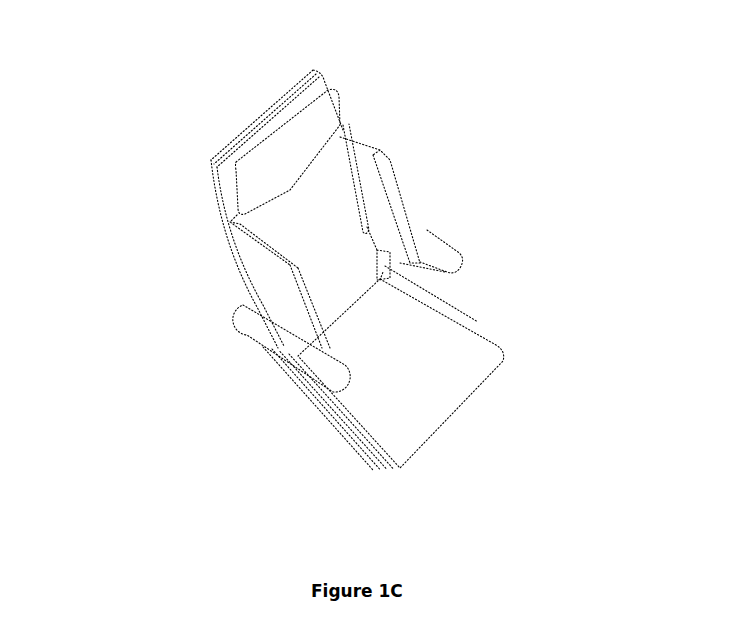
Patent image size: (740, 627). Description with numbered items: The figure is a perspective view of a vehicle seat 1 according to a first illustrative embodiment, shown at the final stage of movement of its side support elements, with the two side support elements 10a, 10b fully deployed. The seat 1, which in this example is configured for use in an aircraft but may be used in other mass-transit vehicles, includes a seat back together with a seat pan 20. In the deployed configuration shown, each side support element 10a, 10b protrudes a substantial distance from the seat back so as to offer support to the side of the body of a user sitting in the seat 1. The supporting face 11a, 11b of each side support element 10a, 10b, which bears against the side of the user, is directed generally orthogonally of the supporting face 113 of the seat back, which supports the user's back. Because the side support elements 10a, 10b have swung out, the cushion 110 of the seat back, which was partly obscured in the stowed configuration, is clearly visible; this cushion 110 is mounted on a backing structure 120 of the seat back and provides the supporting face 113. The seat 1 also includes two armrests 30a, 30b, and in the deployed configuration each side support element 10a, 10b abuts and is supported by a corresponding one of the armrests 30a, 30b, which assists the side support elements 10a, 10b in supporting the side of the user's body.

The vehicle seat 1 is at (532, 38).
The cushion 110 is at (287, 207).
The supporting face of the seat back 113 is at (323, 187).
The backing structure 120 is at (227, 244).
The side support element 10a is at (375, 148).
The side support element 10b is at (270, 280).
The supporting face of the side support element 11a is at (373, 190).
The supporting face of the side support element 11b is at (300, 278).
The armrest 30a is at (443, 260).
The armrest 30b is at (305, 355).
The seat pan 20 is at (428, 366).